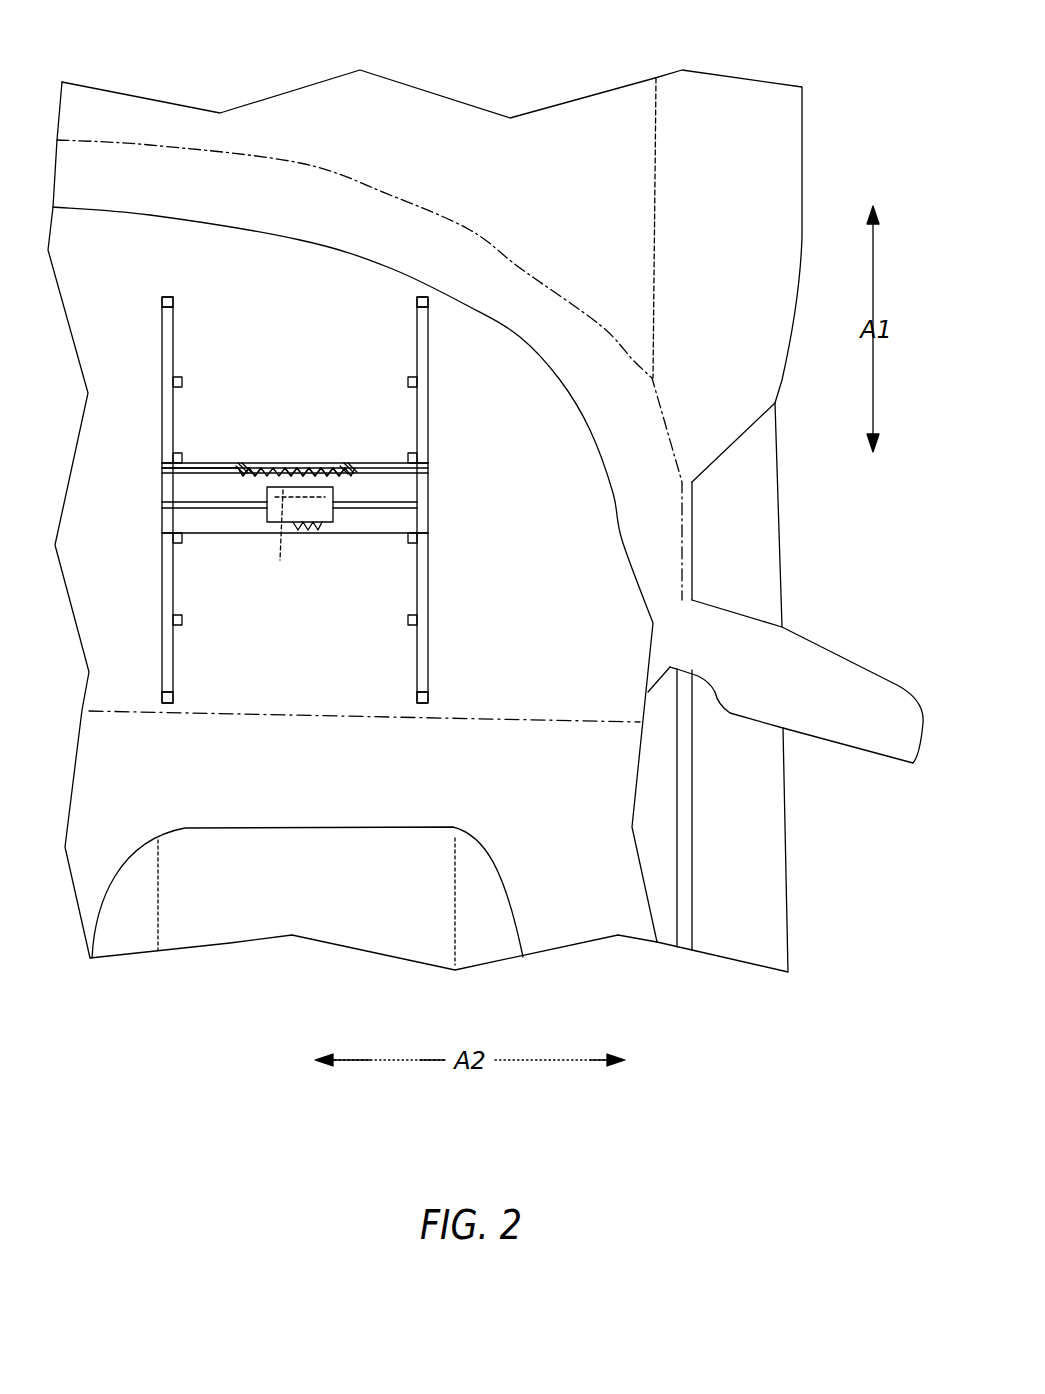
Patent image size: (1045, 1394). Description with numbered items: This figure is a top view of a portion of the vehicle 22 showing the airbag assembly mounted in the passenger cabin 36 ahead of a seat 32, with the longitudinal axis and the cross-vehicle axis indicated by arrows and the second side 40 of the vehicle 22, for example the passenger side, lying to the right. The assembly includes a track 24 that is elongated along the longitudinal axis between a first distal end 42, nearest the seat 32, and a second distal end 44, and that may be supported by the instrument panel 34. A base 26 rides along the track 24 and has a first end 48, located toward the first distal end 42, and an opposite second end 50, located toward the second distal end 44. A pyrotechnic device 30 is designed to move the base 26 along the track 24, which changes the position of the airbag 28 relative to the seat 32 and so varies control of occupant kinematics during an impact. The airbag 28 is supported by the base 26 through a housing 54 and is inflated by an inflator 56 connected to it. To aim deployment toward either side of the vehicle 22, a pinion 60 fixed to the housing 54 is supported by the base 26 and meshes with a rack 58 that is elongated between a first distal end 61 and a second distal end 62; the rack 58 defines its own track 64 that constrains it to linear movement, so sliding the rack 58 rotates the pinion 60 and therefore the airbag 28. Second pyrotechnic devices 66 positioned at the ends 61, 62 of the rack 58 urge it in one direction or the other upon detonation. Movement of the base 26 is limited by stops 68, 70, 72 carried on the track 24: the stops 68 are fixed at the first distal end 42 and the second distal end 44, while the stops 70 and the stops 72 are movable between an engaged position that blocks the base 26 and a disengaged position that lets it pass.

The vehicle 22 is at (468, 88).
The track 24 is at (162, 635).
The base 26 is at (228, 528).
The airbag 28 is at (283, 540).
The pyrotechnic device 30 is at (162, 465).
The seat 32 is at (493, 925).
The instrument panel 34 is at (540, 720).
The passenger cabin 36 is at (580, 845).
The second side 40 is at (750, 533).
The first distal end 42 is at (168, 706).
The second distal end 44 is at (166, 296).
The first end 48 is at (330, 530).
The second end 50 is at (375, 463).
The housing 54 is at (333, 497).
The inflator 56 is at (284, 470).
The rack 58 is at (309, 470).
The pinion 60 is at (302, 522).
The first distal end 61 is at (250, 466).
The second distal end 62 is at (336, 470).
The track 64 is at (185, 474).
The second pyrotechnic device 66 is at (242, 468).
The stop 68 is at (162, 300).
The stop 70 is at (183, 380).
The stop 72 is at (180, 455).